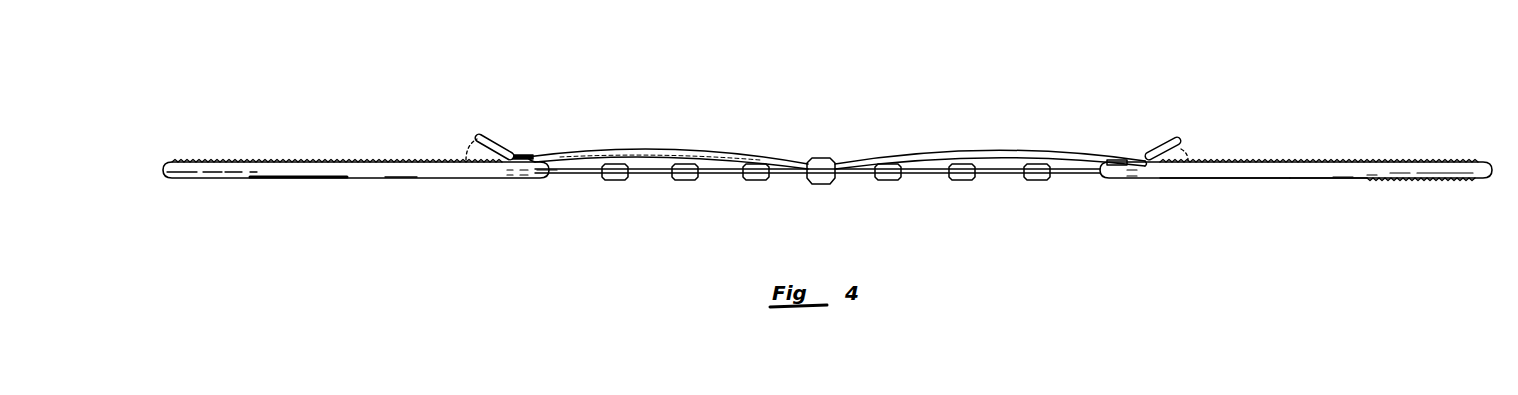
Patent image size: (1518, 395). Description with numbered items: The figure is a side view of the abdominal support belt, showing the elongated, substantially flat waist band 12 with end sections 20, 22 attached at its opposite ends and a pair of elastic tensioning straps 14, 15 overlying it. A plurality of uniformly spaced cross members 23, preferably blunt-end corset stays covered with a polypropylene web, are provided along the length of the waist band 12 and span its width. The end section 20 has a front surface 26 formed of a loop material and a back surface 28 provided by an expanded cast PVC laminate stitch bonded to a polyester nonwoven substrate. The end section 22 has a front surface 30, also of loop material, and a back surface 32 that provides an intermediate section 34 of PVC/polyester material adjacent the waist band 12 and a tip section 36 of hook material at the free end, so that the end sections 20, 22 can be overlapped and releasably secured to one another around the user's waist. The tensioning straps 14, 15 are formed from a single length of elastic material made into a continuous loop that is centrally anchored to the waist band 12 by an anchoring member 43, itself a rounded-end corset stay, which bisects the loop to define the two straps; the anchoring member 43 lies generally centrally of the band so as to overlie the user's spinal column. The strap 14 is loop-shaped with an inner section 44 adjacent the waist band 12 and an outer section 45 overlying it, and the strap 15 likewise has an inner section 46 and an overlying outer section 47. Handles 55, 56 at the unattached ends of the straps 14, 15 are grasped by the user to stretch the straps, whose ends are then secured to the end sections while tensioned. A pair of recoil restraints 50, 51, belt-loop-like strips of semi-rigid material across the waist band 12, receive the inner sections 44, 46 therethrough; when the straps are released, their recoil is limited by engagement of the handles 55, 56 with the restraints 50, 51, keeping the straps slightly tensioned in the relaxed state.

The waist band 12 is at (788, 178).
The tensioning strap 14 is at (726, 146).
The tensioning strap 15 is at (1017, 144).
The end section 20 is at (473, 98).
The end section 22 is at (1492, 100).
The cross members 23 is at (610, 181).
The front surface 26 is at (284, 161).
The back surface 28 is at (303, 181).
The front surface 30 is at (1308, 162).
The back surface 32 is at (1307, 184).
The intermediate section 34 is at (1220, 183).
The tip section 36 is at (1420, 183).
The anchoring member 43 is at (818, 159).
The inner section 44 is at (656, 159).
The outer section 45 is at (667, 156).
The inner section 46 is at (928, 162).
The outer section 47 is at (928, 153).
The recoil restraint 50 is at (523, 156).
The recoil restraint 51 is at (1124, 164).
The handle 55 is at (492, 141).
The handle 56 is at (1170, 141).